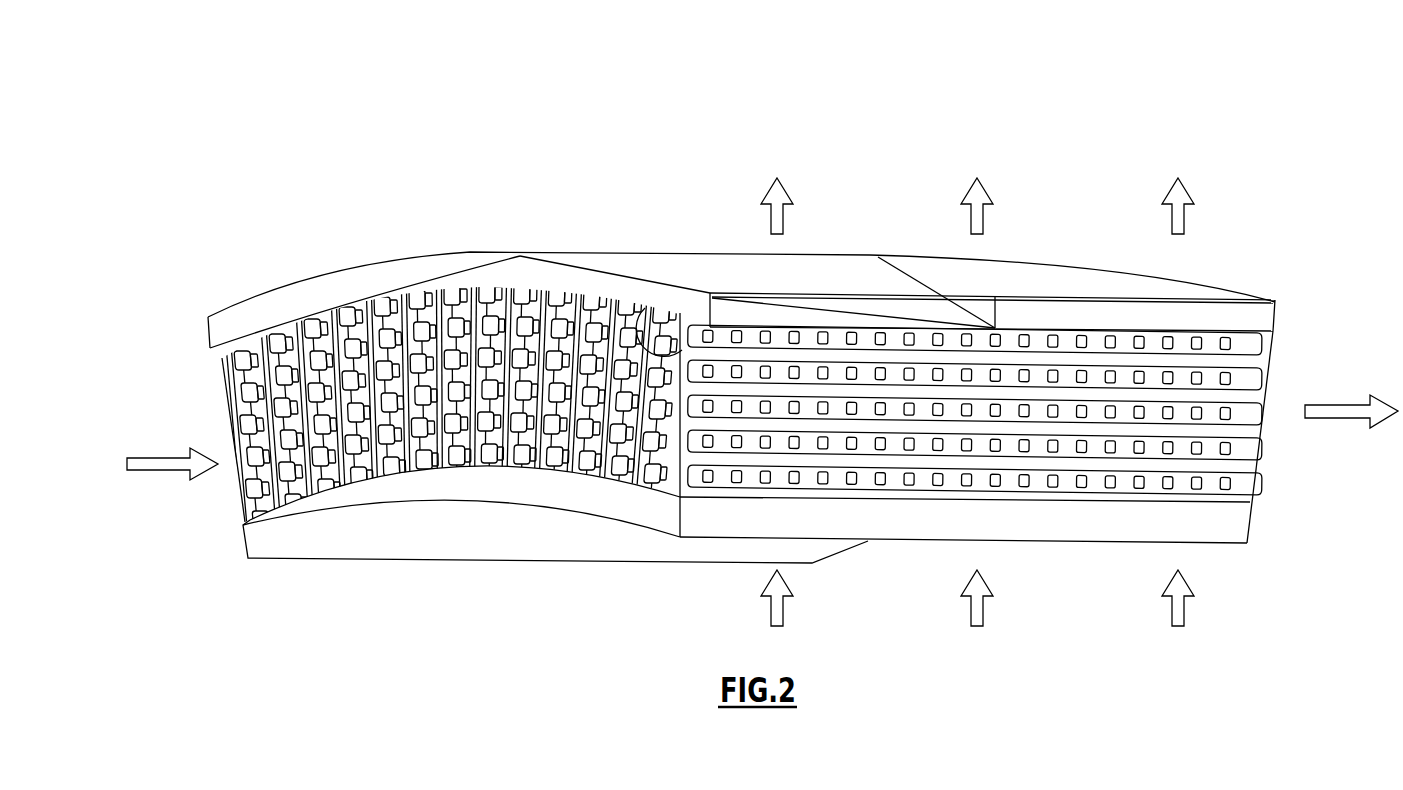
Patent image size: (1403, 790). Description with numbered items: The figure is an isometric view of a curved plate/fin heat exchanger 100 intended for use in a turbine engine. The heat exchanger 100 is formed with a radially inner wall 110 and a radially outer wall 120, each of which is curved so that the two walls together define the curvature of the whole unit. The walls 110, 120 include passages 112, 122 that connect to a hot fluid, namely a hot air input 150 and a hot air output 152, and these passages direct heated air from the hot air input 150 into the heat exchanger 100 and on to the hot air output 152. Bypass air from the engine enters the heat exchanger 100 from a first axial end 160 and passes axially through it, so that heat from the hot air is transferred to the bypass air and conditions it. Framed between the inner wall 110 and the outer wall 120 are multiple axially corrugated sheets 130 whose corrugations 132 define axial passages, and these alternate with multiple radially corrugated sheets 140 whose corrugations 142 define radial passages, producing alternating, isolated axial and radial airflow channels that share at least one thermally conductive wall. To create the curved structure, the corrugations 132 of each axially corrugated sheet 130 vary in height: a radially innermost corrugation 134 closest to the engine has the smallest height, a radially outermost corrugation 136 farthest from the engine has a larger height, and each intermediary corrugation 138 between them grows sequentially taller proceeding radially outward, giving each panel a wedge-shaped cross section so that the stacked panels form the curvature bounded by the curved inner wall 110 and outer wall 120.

The curved plate/fin heat exchanger 100 is at (1147, 101).
The radially inner wall 110 is at (627, 548).
The passage 112 is at (1242, 527).
The radially outer wall 120 is at (469, 250).
The passage 122 is at (1260, 320).
The axially corrugated sheet 130 is at (240, 398).
The corrugation 132 is at (1265, 340).
The radially innermost corrugation 134 is at (263, 492).
The radially outermost corrugation 136 is at (228, 352).
The intermediary corrugation 138 is at (240, 438).
The radially corrugated sheet 140 is at (670, 316).
The corrugation 142 is at (678, 356).
The hot air input 150 is at (783, 608).
The hot air output 152 is at (783, 218).
The first axial end 160 is at (157, 470).